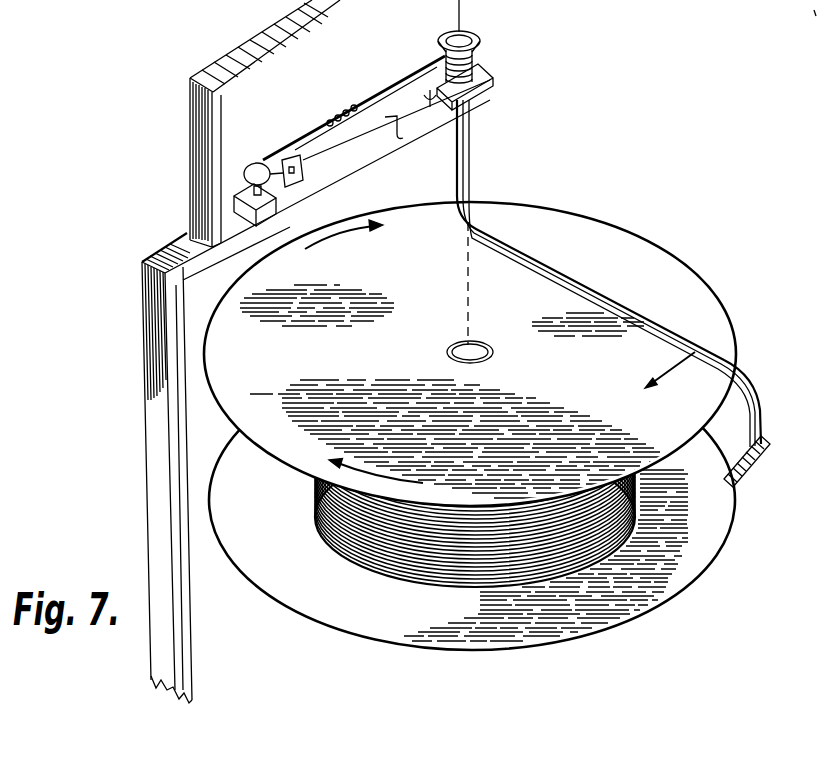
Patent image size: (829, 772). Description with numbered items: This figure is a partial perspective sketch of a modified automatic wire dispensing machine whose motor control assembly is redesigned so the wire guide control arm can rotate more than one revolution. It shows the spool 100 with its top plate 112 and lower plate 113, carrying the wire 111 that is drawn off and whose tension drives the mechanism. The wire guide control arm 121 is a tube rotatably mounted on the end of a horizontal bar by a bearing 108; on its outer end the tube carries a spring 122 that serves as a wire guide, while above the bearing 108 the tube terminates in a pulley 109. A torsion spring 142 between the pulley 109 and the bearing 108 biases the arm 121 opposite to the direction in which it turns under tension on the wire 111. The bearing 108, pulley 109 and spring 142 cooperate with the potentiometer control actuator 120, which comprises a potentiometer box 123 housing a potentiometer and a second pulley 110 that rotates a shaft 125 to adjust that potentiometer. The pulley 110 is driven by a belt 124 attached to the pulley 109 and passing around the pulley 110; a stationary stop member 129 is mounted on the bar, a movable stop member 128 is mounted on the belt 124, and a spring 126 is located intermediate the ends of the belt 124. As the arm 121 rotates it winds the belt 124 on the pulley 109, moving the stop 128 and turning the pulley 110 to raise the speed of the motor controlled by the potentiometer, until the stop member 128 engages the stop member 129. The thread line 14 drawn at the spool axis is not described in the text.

The spool 100 is at (628, 205).
The bearing 108 is at (492, 96).
The pulley 109 is at (478, 34).
The second pulley 110 is at (251, 163).
The wire 111 is at (682, 490).
The top plate 112 is at (640, 254).
The lower plate 113 is at (677, 570).
The thread 14 is at (471, 292).
The potentiometer control actuator 120 is at (315, 101).
The wire guide control arm 121 is at (496, 244).
The spring 122 is at (740, 456).
The potentiometer box 123 is at (250, 212).
The belt 124 is at (384, 82).
The shaft 125 is at (263, 197).
The spring 126 is at (340, 112).
The movable stop member 128 is at (400, 128).
The stationary stop member 129 is at (298, 190).
The torsion spring 142 is at (482, 63).